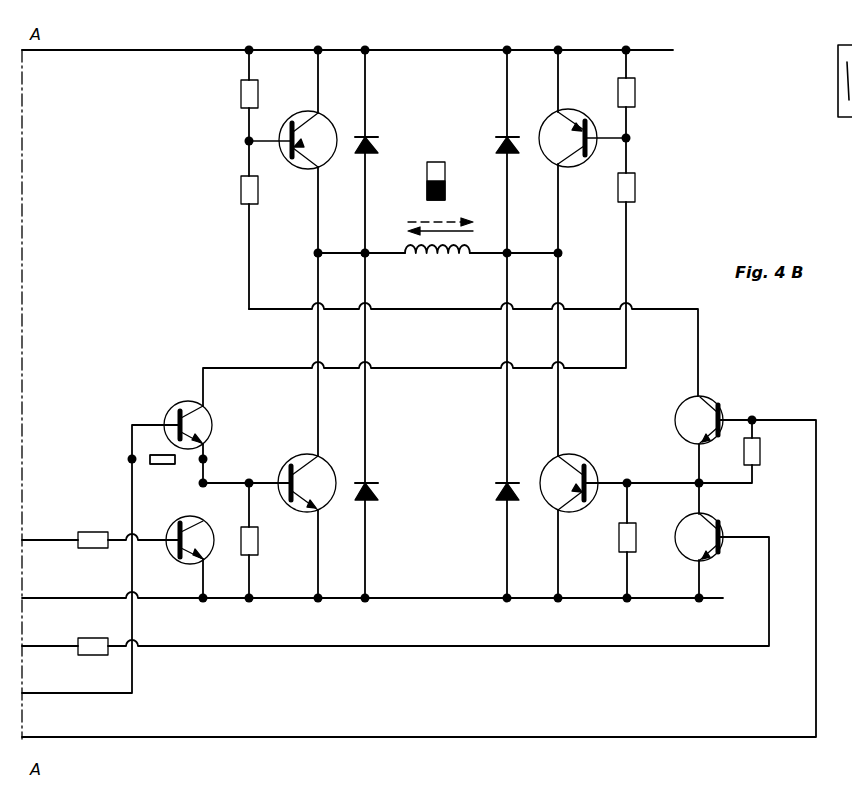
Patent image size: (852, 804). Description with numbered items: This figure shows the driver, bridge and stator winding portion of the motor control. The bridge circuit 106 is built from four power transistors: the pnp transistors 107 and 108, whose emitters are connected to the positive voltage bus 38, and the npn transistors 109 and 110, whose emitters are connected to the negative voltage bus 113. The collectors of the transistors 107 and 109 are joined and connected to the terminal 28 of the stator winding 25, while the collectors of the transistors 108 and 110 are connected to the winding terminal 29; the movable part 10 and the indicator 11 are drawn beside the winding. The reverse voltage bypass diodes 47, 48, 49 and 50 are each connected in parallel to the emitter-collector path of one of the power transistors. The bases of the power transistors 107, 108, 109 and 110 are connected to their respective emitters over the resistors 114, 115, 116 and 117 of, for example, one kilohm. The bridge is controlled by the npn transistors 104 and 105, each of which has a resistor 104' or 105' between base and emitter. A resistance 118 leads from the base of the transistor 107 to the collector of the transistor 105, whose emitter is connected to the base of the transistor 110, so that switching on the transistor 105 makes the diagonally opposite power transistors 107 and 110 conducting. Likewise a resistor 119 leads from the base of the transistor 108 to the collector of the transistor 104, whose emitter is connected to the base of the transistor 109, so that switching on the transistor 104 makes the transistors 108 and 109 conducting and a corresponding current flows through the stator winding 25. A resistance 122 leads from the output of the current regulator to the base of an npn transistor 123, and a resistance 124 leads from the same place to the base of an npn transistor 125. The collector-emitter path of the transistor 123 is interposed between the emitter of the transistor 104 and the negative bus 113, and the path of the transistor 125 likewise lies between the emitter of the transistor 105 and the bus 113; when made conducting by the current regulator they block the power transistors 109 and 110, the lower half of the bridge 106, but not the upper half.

The positive voltage bus 38 is at (200, 49).
The bridge circuit 106 is at (435, 78).
The movable member direction 10 is at (499, 220).
The position indicator 11 is at (446, 182).
The stator winding 25 is at (440, 263).
The terminal 28 is at (366, 252).
The winding terminal 29 is at (508, 252).
The reverse voltage bypass diode 47 is at (378, 148).
The reverse voltage bypass diode 48 is at (495, 142).
The reverse voltage bypass diode 49 is at (378, 492).
The reverse voltage bypass diode 50 is at (495, 496).
The power transistor 107 is at (297, 119).
The power transistor 108 is at (574, 119).
The power transistor 109 is at (307, 463).
The power transistor 110 is at (576, 461).
The resistor 114 is at (241, 92).
The resistor 115 is at (635, 89).
The resistor 116 is at (258, 546).
The resistor 117 is at (619, 546).
The resistance 118 is at (241, 190).
The resistor 119 is at (635, 186).
The npn transistor 104 is at (212, 425).
The resistor 104' is at (132, 443).
The npn transistor 105 is at (730, 414).
The resistor 105' is at (776, 451).
The negative voltage bus 113 is at (415, 600).
The resistance 122 is at (118, 512).
The npn transistor 123 is at (190, 518).
The resistance 124 is at (110, 622).
The npn transistor 125 is at (722, 521).